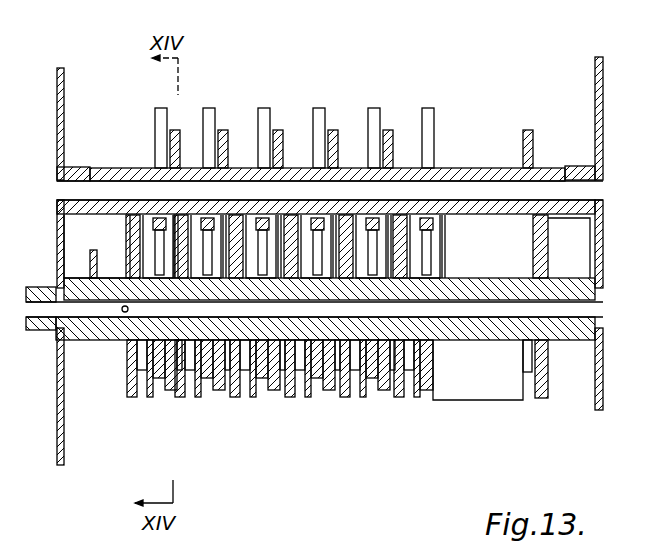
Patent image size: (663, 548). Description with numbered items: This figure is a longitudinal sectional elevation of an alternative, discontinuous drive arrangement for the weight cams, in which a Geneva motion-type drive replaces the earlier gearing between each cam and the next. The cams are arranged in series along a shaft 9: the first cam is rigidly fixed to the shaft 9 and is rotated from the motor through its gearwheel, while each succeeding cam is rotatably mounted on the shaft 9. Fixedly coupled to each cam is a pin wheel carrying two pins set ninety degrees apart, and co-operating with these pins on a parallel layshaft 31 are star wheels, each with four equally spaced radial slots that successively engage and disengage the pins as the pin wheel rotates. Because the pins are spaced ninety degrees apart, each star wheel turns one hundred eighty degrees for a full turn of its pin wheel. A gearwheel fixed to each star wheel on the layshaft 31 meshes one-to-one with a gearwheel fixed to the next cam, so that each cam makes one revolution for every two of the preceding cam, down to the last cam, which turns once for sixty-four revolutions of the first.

The layshaft 31 is at (477, 190).
The shaft 9 is at (580, 335).